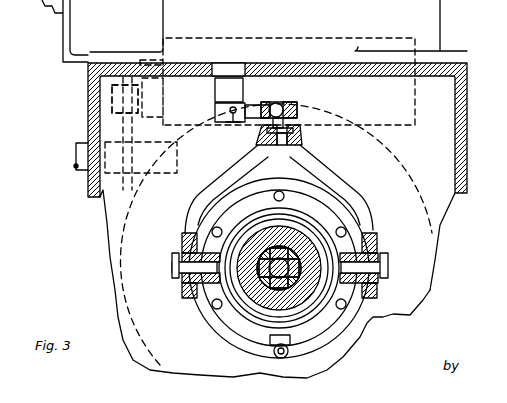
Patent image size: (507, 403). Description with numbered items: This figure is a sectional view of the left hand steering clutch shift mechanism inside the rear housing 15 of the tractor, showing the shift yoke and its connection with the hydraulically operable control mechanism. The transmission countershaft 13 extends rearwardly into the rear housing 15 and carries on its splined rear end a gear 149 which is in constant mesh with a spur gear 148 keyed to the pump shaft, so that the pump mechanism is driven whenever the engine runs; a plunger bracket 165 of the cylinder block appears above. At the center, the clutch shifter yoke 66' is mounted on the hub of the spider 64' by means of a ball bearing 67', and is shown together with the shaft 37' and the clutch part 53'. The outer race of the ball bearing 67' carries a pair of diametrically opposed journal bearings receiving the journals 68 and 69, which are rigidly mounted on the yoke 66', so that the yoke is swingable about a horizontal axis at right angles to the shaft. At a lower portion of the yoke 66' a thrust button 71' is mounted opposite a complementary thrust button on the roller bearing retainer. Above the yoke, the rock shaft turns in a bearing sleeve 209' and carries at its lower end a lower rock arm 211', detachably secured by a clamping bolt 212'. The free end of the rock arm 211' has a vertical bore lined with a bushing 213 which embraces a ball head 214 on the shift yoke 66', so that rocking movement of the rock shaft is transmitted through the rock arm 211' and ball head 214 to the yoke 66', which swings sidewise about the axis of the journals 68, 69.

The transmission countershaft 13 is at (75, 148).
The rear housing 15 is at (469, 127).
The plunger bracket 165 is at (63, 39).
The spur gear 148 is at (129, 121).
The gear 149 is at (140, 185).
The bearing sleeve 209' is at (208, 82).
The lower rock arm 211' is at (225, 112).
The clamping bolt 212' is at (229, 126).
The bushing 213 is at (290, 104).
The ball head 214 is at (275, 104).
The clutch shifter yoke 66' is at (333, 187).
The ball bearing 67' is at (279, 266).
The spider 64' is at (279, 251).
The hub 53' is at (284, 245).
The shaft 37' is at (251, 310).
The journal 68 is at (174, 275).
The journal 69 is at (385, 274).
The thrust button 71' is at (291, 355).